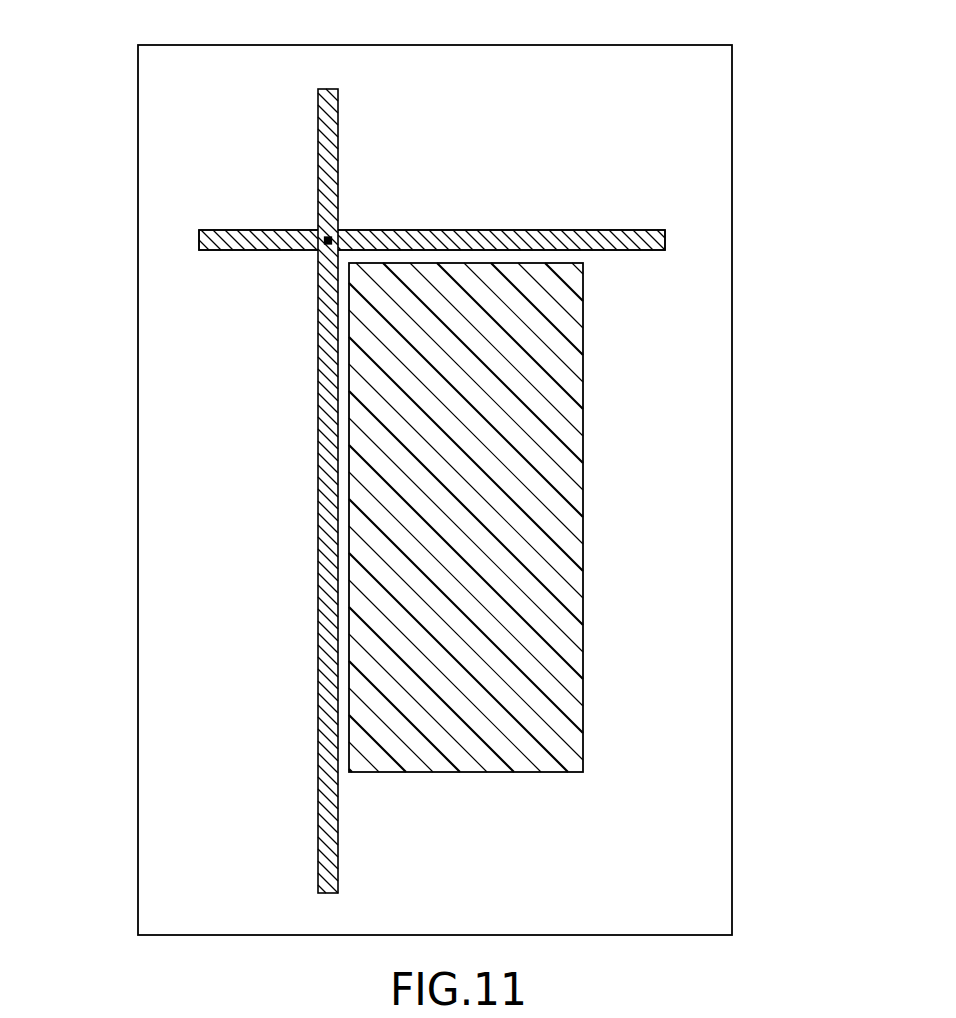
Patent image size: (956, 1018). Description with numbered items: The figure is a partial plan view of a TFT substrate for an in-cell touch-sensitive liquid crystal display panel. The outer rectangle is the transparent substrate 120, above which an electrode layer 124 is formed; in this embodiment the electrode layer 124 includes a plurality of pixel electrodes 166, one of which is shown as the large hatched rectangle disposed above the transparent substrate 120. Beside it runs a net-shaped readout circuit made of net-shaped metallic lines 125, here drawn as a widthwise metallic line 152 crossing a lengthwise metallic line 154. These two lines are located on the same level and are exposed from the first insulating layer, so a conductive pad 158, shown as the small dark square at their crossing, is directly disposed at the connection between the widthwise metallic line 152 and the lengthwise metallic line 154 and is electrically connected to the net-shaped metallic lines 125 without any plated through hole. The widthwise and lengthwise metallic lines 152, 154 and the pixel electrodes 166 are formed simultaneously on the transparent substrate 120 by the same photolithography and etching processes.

The transparent substrate 120 is at (707, 802).
The electrode layer 124 is at (590, 350).
The net-shaped metallic lines 125 is at (527, 228).
The widthwise metallic line 152 is at (485, 245).
The lengthwise metallic line 154 is at (327, 653).
The conductive pad 158 is at (322, 239).
The pixel electrode 166 is at (536, 482).